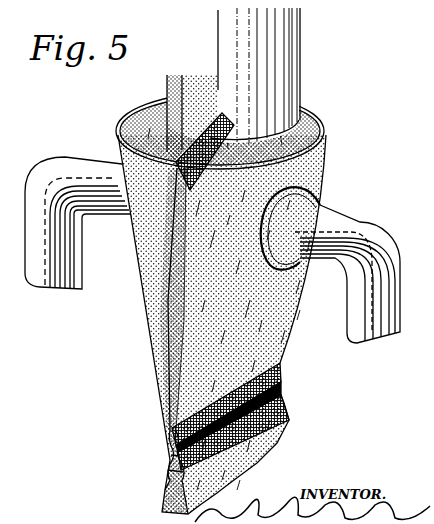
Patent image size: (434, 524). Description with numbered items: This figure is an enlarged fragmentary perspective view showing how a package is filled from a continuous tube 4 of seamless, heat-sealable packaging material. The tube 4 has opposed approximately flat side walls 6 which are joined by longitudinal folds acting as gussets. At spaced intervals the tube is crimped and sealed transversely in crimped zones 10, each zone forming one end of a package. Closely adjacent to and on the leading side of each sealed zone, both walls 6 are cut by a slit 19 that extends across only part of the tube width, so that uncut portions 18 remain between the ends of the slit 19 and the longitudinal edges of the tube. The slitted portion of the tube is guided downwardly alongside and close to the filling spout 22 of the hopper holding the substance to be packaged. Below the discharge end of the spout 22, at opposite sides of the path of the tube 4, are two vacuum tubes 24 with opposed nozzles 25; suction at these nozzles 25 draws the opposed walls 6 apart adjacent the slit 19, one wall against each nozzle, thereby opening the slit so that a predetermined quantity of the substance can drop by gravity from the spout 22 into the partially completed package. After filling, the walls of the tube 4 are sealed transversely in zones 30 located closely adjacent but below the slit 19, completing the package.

The tube 4 is at (150, 371).
The side walls 6 is at (124, 116).
The crimped zones 10 is at (170, 437).
The uncut portions 18 is at (169, 458).
The slit 19 is at (228, 160).
The filling spout 22 is at (217, 120).
The vacuum tubes 24 is at (40, 277).
The nozzles 25 is at (318, 210).
The zones 30 is at (172, 472).